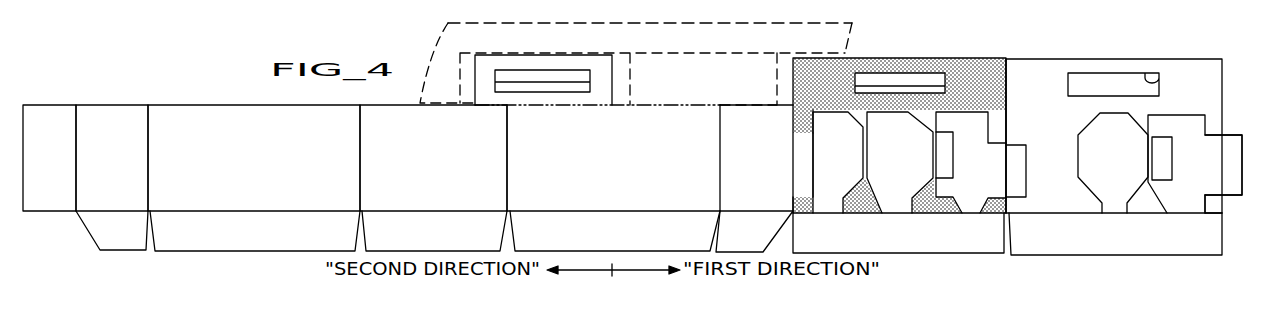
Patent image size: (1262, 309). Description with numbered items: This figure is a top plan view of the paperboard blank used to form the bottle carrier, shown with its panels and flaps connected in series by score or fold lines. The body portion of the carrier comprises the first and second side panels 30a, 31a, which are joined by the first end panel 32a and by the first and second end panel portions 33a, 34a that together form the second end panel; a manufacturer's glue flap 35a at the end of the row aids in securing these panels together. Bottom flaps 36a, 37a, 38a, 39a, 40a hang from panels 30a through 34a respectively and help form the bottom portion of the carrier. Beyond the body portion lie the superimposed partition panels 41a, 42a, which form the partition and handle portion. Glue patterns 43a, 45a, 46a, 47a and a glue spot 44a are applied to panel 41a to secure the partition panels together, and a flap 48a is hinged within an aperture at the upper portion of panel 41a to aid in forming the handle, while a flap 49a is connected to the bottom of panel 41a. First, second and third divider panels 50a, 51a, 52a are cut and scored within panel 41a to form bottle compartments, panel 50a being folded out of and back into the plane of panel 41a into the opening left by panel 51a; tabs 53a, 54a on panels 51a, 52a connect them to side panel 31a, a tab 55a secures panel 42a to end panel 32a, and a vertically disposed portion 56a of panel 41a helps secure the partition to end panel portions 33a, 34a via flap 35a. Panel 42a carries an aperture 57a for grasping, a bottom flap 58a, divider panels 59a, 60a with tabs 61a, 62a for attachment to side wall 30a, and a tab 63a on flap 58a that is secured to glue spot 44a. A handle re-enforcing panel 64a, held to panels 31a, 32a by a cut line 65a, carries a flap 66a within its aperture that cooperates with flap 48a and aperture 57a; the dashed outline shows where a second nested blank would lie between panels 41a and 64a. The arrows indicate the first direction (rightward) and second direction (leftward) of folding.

The first side panel 30a is at (267, 175).
The second side panel 31a is at (628, 173).
The first end panel 32a is at (442, 173).
The first end panel portion 33a is at (118, 146).
The second end panel portion 34a is at (773, 171).
The manufacturer's glue flap 35a is at (60, 146).
The bottom flap 36a is at (266, 247).
The bottom flap 37a is at (623, 247).
The bottom flap 38a is at (442, 247).
The bottom flap 39a is at (132, 247).
The bottom flap 40a is at (759, 245).
The partition panel 41a is at (442, 107).
The partition panel 42a is at (1122, 58).
The glue pattern 43a is at (800, 84).
The glue spot 44a is at (795, 207).
The glue pattern 45a is at (863, 215).
The glue pattern 46a is at (931, 215).
The glue pattern 47a is at (992, 215).
The flap 48a is at (876, 74).
The flap 49a is at (805, 215).
The first divider panel 50a is at (854, 157).
The second divider panel 51a is at (908, 157).
The third divider panel 52a is at (988, 175).
The tab 53a is at (948, 146).
The tab 54a is at (1018, 152).
The tab 55a is at (1006, 128).
The vertically disposed portion 56a is at (803, 178).
The aperture 57a is at (1158, 82).
The flap 58a is at (1132, 250).
The divider panel 59a is at (1130, 168).
The divider panel 60a is at (1212, 163).
The tab 61a is at (1165, 147).
The tab 62a is at (1232, 170).
The tab 63a is at (1215, 212).
The handle re-enforcing panel 64a is at (483, 66).
The cut line 65a is at (592, 105).
The flap 66a is at (558, 75).